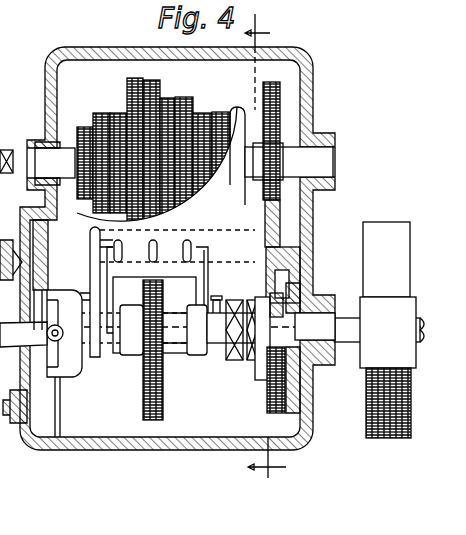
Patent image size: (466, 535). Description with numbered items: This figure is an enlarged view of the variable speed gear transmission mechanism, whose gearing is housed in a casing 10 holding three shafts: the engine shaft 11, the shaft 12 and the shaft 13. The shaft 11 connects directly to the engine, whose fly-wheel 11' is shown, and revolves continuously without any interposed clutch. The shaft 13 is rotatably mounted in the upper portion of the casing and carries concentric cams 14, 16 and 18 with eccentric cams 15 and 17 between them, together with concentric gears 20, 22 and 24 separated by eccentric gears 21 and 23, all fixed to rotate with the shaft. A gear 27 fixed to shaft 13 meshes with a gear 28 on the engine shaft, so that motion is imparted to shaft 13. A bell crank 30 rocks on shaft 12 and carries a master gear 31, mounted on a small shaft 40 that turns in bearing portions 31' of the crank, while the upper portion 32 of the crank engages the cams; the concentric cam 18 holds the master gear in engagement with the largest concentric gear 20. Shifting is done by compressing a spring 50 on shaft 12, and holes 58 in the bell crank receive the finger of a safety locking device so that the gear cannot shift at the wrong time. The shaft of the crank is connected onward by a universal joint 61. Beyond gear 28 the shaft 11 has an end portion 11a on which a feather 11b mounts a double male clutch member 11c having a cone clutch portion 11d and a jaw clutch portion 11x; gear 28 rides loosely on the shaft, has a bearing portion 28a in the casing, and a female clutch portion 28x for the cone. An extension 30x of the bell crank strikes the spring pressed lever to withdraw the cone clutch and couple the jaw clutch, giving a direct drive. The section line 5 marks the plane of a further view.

The casing 10 is at (79, 47).
The shaft 13 is at (42, 157).
The concentric gear 24 is at (80, 126).
The eccentric gear 23 is at (97, 112).
The concentric gear 22 is at (114, 113).
The eccentric gear 21 is at (130, 155).
The concentric gear 20 is at (150, 76).
The concentric cam 14 is at (163, 98).
The eccentric cam 15 is at (182, 100).
The concentric cam 16 is at (200, 113).
The eccentric cam 17 is at (221, 112).
The concentric cam 18 is at (233, 198).
The gear 27 is at (270, 82).
The upper portion of bell crank 32 is at (237, 137).
The extension of bell crank 30x is at (283, 236).
The clutch housing 28x is at (287, 262).
The bearing portion 28a is at (318, 293).
The shaft 11 is at (243, 354).
The feather 11b is at (315, 326).
The fly-wheel 11' is at (388, 314).
The shaft 12 is at (84, 258).
The bell crank 30 is at (91, 230).
The holes 58 is at (113, 250).
The spring 50 is at (104, 240).
The small shaft 40 is at (162, 378).
The bearing portions 31' is at (152, 346).
The master gear 31 is at (150, 353).
The cone clutch portion 11d is at (260, 300).
The jaw clutch portion 11x is at (253, 362).
The double male clutch member 11c is at (262, 391).
The gear 28 is at (266, 411).
The end portion 11a is at (290, 414).
The universal joint 61 is at (72, 379).
The section line 5 is at (265, 250).